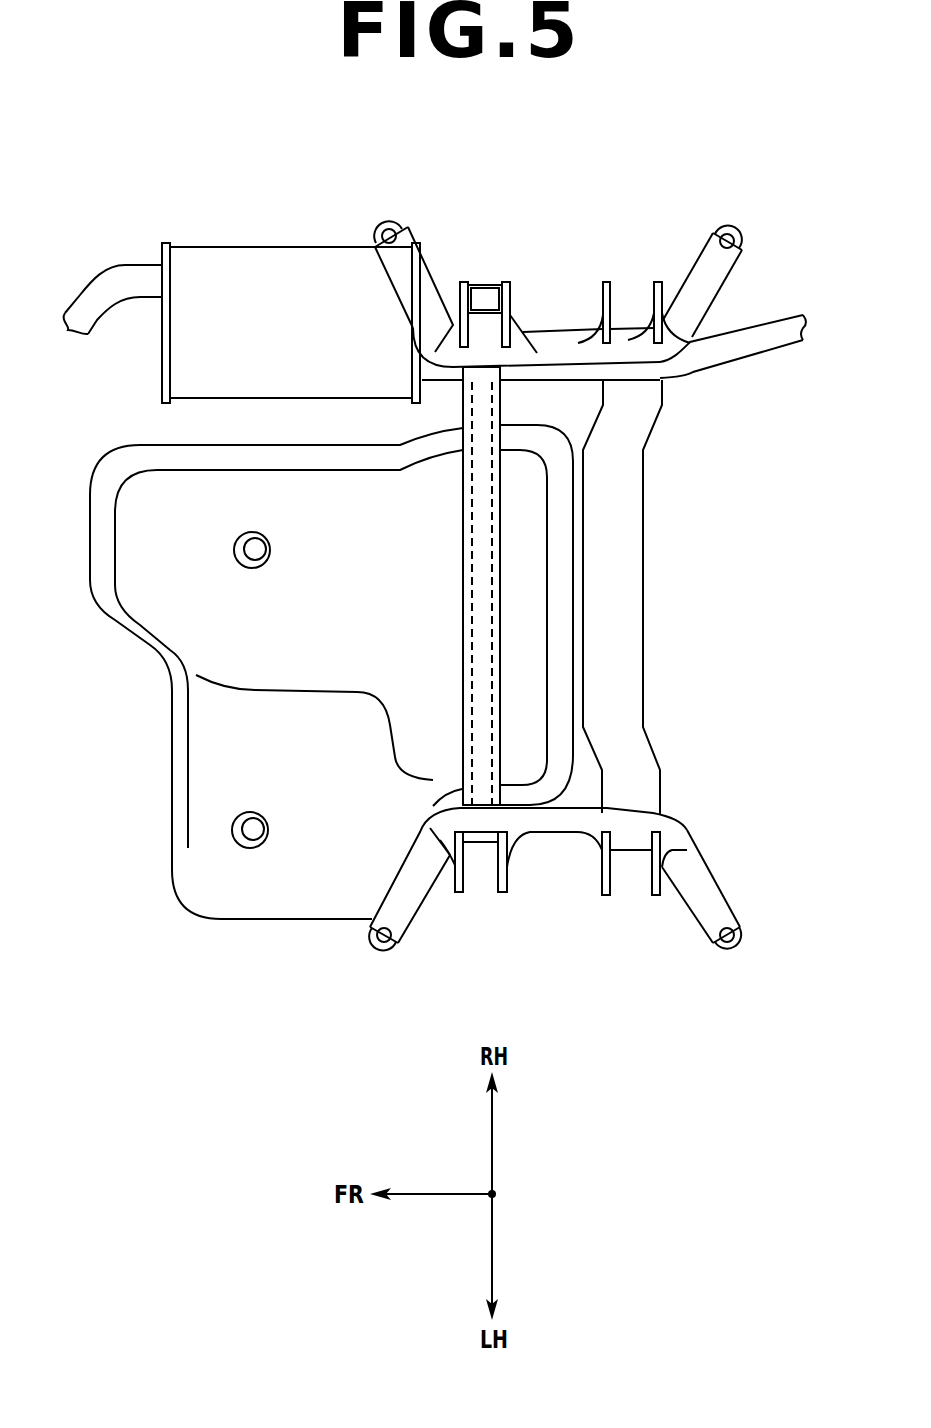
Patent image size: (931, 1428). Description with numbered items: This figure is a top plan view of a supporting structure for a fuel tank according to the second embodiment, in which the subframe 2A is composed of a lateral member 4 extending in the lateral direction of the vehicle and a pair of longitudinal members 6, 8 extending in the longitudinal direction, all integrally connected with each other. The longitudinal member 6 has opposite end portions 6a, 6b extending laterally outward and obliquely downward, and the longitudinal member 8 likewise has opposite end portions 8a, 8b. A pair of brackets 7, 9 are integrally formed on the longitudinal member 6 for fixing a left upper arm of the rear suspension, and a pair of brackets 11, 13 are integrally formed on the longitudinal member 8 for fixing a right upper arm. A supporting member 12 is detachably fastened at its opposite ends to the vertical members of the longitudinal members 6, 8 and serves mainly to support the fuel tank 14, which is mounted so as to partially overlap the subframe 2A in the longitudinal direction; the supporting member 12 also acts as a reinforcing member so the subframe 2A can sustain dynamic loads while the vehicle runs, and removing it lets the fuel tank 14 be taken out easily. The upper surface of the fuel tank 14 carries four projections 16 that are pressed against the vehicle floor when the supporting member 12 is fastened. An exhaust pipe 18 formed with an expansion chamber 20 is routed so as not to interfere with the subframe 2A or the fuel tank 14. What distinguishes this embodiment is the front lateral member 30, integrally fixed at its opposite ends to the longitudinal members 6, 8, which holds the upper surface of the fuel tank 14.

The subframe 2A is at (660, 536).
The lateral member 4 is at (628, 608).
The longitudinal member 6 is at (560, 840).
The end portion 6a is at (380, 950).
The end portion 6b is at (728, 912).
The bracket 7 is at (455, 900).
The longitudinal member 8 is at (555, 348).
The end portion 8a is at (403, 250).
The end portion 8b is at (725, 258).
The bracket 9 is at (606, 900).
The bracket 11 is at (460, 282).
The supporting member 12 is at (475, 528).
The bracket 13 is at (603, 281).
The fuel tank 14 is at (267, 912).
The projection 16 is at (235, 553).
The exhaust pipe 18 is at (98, 290).
The expansion chamber 20 is at (250, 260).
The front lateral member 30 is at (463, 622).